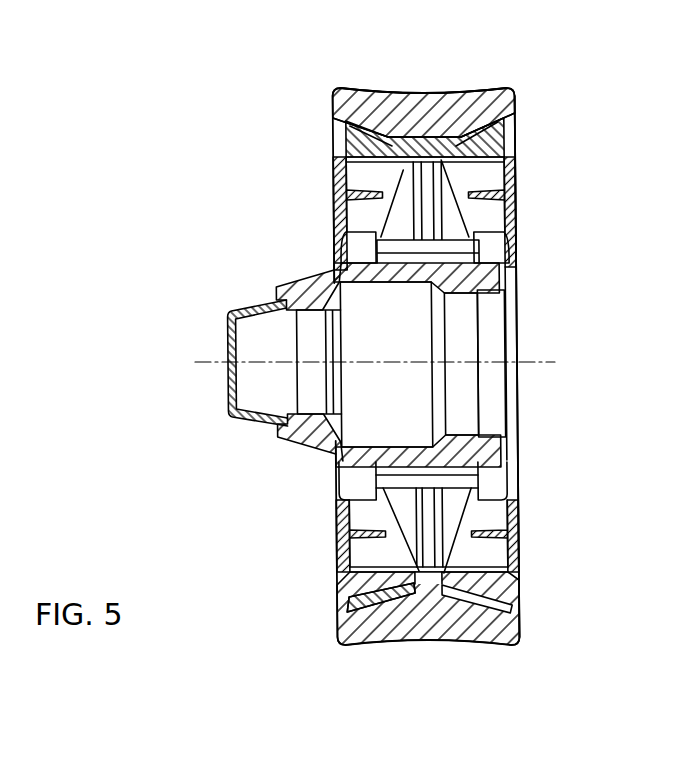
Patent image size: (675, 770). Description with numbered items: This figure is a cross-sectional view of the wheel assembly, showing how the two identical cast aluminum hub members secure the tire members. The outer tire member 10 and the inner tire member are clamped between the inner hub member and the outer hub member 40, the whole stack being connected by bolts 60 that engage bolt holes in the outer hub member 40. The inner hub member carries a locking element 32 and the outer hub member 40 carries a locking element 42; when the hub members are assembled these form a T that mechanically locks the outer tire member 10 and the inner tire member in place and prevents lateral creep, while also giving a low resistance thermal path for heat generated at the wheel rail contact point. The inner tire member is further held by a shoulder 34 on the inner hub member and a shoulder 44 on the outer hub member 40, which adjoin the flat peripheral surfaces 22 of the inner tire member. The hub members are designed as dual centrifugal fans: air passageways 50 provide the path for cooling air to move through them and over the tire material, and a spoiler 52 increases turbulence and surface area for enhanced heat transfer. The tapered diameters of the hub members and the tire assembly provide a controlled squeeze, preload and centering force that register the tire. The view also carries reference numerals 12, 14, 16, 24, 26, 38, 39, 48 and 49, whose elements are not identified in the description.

The outer tire member 10 is at (355, 90).
The hub 12 is at (515, 90).
The outer bearing cup 14 is at (443, 137).
The hub outer surface 16 is at (418, 95).
The flat peripheral surfaces 22 is at (383, 140).
The hub wall 24 is at (340, 168).
The bearing cage 26 is at (343, 146).
The locking element 32 is at (437, 158).
The shoulder 34 is at (515, 120).
The spacer 38 is at (427, 227).
The snap ring 39 is at (518, 530).
The outer hub member 40 is at (340, 557).
The locking element 42 is at (347, 585).
The shoulder 44 is at (347, 127).
The bearing cage 48 is at (425, 543).
The inboard bearing 49 is at (340, 520).
The air passageways 50 is at (346, 158).
The spoiler 52 is at (348, 533).
The bolts 60 is at (335, 255).